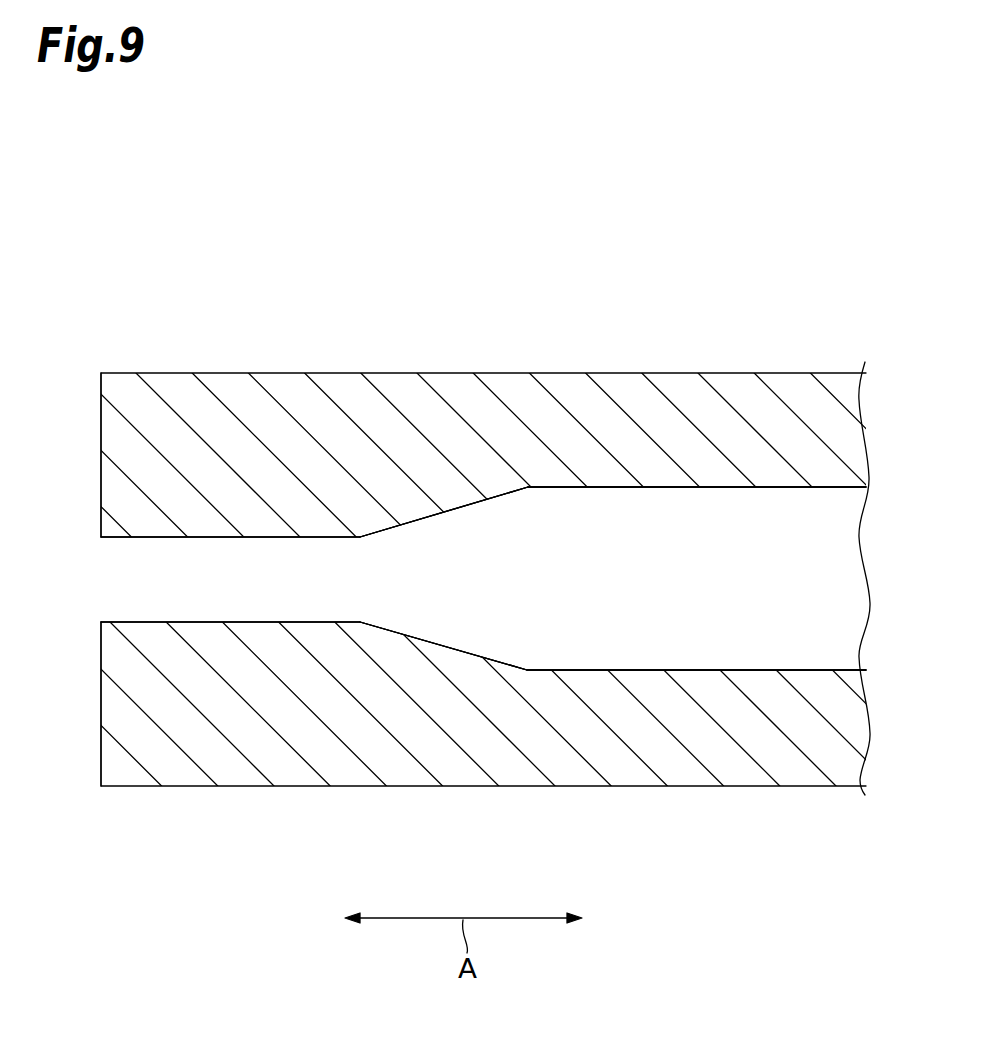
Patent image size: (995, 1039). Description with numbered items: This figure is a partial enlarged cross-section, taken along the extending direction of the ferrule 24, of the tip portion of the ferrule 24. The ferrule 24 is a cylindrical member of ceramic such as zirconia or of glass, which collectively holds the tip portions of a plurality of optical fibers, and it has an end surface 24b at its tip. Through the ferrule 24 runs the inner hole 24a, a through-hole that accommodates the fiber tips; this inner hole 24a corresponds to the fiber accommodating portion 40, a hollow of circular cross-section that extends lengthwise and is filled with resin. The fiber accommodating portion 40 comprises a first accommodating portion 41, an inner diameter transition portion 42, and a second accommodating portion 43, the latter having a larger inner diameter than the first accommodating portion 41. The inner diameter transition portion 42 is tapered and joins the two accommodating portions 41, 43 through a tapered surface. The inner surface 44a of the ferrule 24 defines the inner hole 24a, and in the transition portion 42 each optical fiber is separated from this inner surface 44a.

The ferrule 24 is at (780, 297).
The inner hole 24a is at (660, 510).
The end surface 24b is at (101, 419).
The inner surface 44a is at (433, 516).
The fiber accommodating portion 40 is at (483, 687).
The first accommodating portion 41 is at (263, 622).
The inner diameter transition portion 42 is at (475, 655).
The second accommodating portion 43 is at (696, 669).